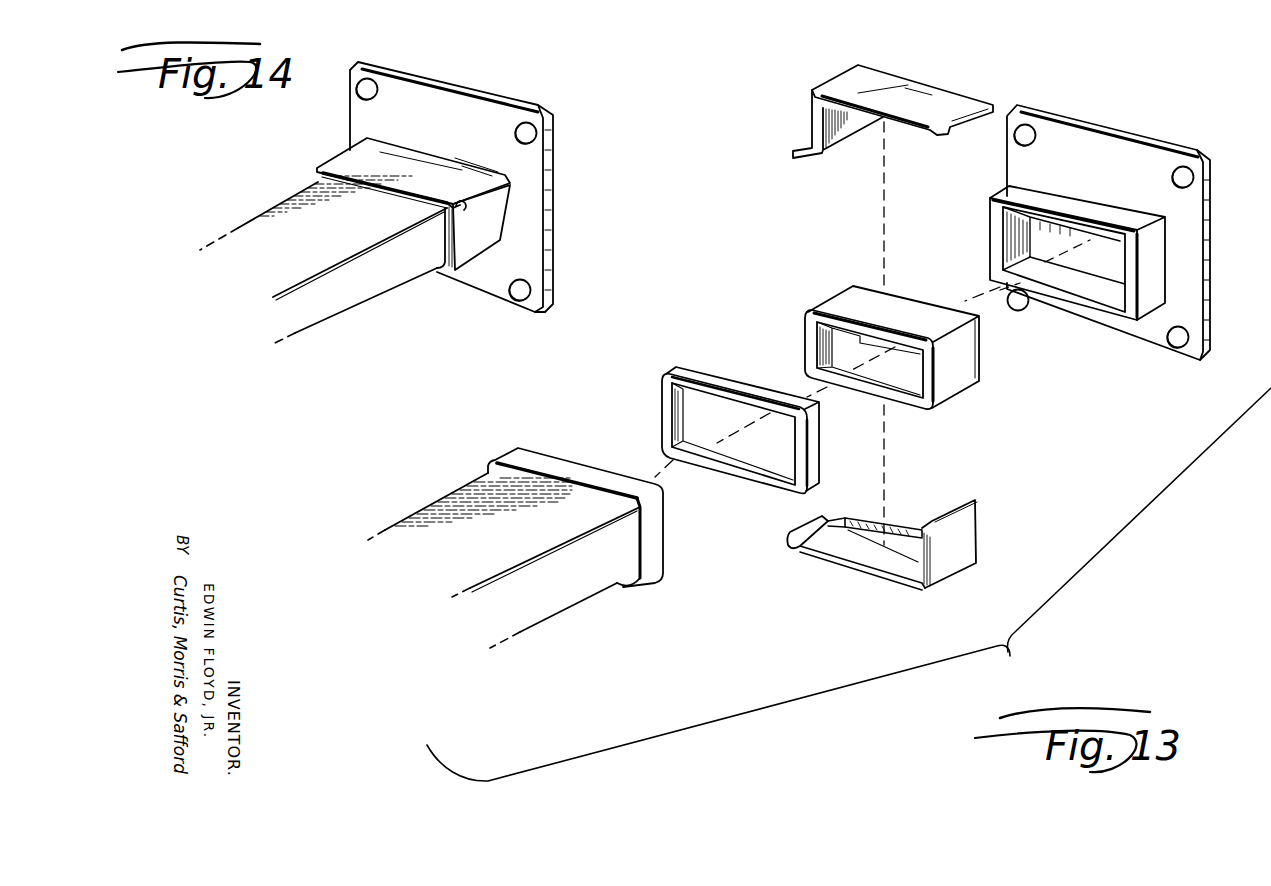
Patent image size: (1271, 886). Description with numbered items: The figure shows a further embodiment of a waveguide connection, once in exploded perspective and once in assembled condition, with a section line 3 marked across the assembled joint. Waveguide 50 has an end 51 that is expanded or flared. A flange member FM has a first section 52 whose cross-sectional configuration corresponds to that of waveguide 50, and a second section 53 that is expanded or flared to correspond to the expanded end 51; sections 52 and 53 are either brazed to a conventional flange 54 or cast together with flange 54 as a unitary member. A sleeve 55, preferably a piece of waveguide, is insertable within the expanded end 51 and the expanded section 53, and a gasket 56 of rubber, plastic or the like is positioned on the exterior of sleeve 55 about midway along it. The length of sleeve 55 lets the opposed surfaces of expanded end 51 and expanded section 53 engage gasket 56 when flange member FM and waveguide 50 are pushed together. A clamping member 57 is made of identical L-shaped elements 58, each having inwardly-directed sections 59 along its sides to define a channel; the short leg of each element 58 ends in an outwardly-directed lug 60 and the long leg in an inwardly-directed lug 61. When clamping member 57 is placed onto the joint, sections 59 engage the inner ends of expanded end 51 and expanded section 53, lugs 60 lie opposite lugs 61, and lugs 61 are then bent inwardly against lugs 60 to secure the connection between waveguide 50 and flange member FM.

In FIG. 14, the waveguide 50 is at (307, 310).
In FIG. 13, the waveguide 50 is at (420, 540).
In FIG. 13, the expanded end 51 is at (648, 553).
In FIG. 13, the first section 52 is at (1080, 270).
In FIG. 13, the second section 53 is at (1150, 285).
In FIG. 14, the flange 54 is at (533, 156).
In FIG. 13, the flange 54 is at (1183, 220).
In FIG. 13, the sleeve 55 is at (965, 373).
In FIG. 13, the gasket 56 is at (660, 402).
In FIG. 14, the clamping member 57 is at (320, 153).
In FIG. 13, the clamping member 57 is at (836, 63).
In FIG. 14, the L-shaped element 58 is at (370, 157).
In FIG. 13, the L-shaped element 58 is at (900, 83).
In FIG. 14, the inwardly-directed section 59 is at (393, 190).
In FIG. 13, the inwardly-directed section 59 is at (882, 118).
In FIG. 14, the outwardly-directed lug 60 is at (447, 205).
In FIG. 13, the outwardly-directed lug 60 is at (797, 146).
In FIG. 14, the inwardly-directed lug 61 is at (460, 200).
In FIG. 13, the inwardly-directed lug 61 is at (960, 135).
In FIG. 14, the section line 3- 3 is at (637, 83).
In FIG. 14, the flange member FM is at (567, 240).
In FIG. 13, the flange member FM is at (1136, 126).